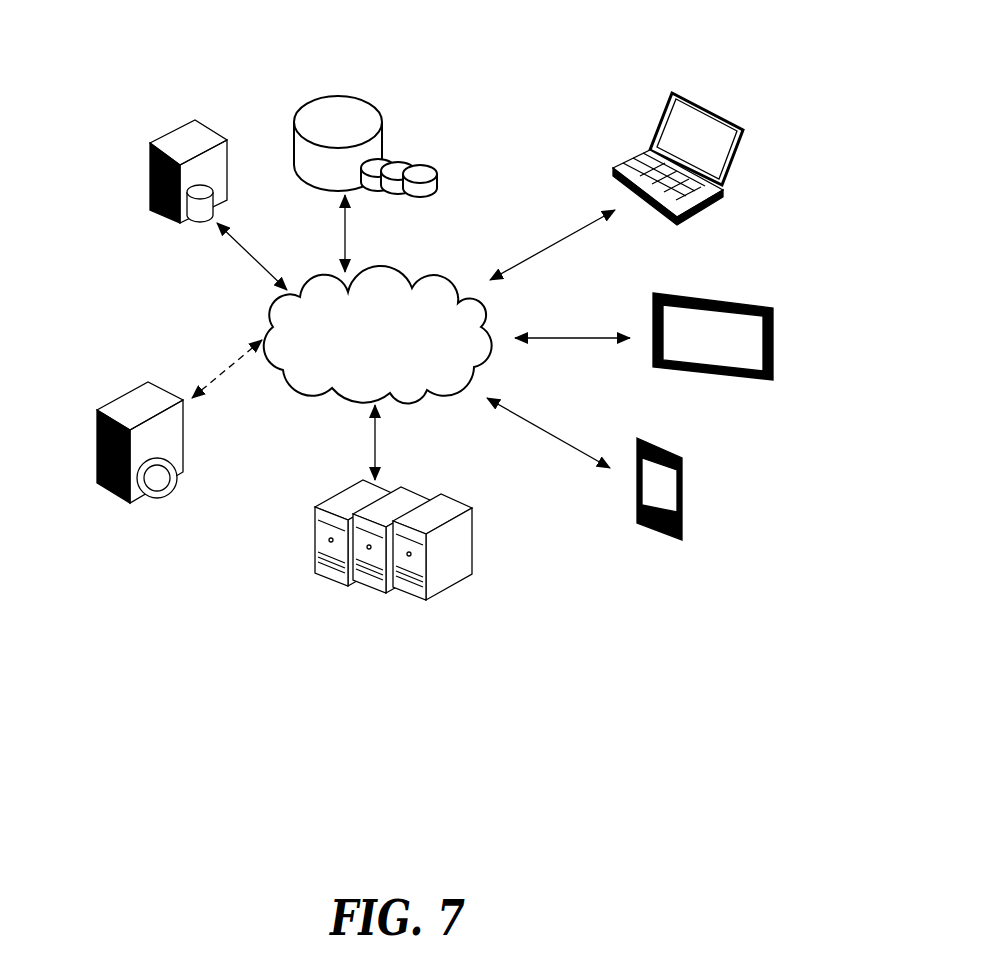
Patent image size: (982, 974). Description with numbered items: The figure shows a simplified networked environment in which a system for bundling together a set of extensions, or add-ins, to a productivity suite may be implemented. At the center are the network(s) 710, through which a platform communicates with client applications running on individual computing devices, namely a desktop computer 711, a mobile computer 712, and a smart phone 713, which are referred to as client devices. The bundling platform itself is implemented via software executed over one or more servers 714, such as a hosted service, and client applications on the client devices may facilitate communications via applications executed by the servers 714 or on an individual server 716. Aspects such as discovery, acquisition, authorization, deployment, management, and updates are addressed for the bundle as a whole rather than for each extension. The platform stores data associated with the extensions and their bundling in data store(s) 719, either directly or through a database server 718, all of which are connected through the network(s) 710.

The network(s) 710 is at (383, 260).
The desktop computer 711 is at (712, 93).
The mobile computer 712 is at (748, 273).
The smart phone 713 is at (688, 455).
The servers 714 is at (342, 483).
The individual server 716 is at (118, 390).
The database server 718 is at (187, 232).
The data store(s) 719 is at (355, 70).